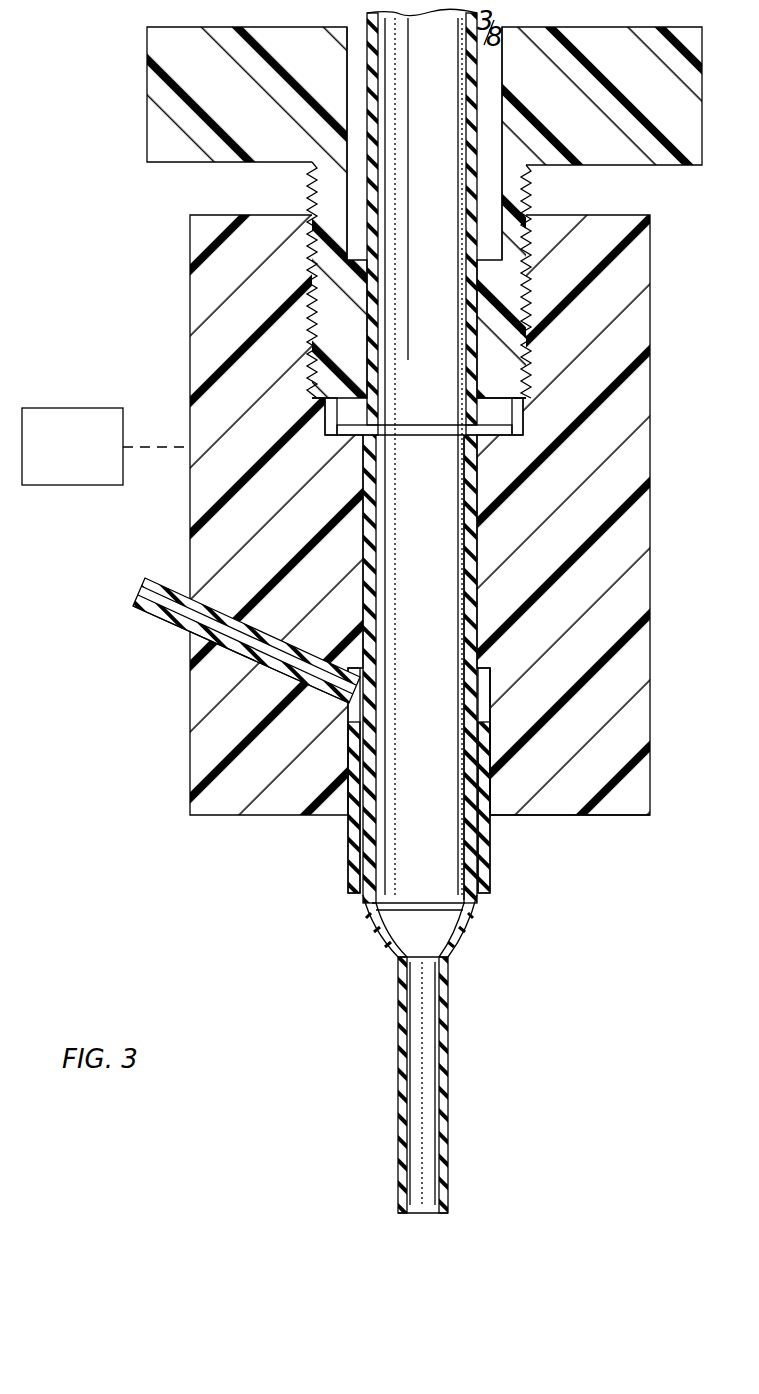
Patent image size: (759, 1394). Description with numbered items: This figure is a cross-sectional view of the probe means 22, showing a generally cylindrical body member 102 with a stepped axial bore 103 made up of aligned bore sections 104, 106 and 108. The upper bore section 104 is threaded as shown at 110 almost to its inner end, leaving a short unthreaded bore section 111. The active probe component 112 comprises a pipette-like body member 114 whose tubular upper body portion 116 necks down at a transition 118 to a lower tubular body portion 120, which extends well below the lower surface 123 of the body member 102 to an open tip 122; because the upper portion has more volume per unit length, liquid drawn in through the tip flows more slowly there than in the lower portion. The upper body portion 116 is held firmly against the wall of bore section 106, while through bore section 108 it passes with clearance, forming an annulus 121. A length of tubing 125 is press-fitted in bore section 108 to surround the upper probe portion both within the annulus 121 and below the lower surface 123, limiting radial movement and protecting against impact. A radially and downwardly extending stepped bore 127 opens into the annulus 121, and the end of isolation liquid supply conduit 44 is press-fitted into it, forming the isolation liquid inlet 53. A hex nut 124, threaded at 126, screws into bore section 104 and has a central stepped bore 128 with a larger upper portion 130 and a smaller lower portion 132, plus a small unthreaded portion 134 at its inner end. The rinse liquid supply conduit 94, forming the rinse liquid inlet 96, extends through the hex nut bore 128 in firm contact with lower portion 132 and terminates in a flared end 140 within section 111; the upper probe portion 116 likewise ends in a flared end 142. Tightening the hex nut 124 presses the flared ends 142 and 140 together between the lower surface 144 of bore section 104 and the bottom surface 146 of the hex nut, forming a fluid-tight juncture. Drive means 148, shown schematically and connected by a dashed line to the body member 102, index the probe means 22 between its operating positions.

The probe means 22 is at (663, 405).
The isolation liquid supply conduit 44 is at (163, 627).
The isolation liquid inlet 53 is at (188, 643).
The rinse liquid supply conduit 94 is at (375, 192).
The rinse liquid inlet 96 is at (480, 250).
The body member 102 is at (628, 548).
The axial bore 103 is at (473, 550).
The bore section 104 is at (312, 268).
The bore section 106 is at (363, 573).
The bore section 108 is at (489, 692).
The threads 110 is at (531, 270).
The unthreaded bore section 111 is at (516, 416).
The active probe component 112 is at (449, 1028).
The pipette-like body member 114 is at (470, 610).
The upper body portion 116 is at (365, 893).
The neck-down transition 118 is at (388, 940).
The lower body portion 120 is at (447, 1100).
The annulus 121 is at (488, 672).
The open tip 122 is at (450, 1213).
The lower surface 123 is at (551, 816).
The hex nut 124 is at (165, 153).
The tubing 125 is at (490, 745).
The threads 126 is at (529, 197).
The stepped bore 127 is at (282, 673).
The stepped bore 128 is at (348, 122).
The upper bore portion 130 is at (507, 86).
The lower bore portion 132 is at (465, 338).
The unthreaded portion 134 is at (327, 405).
The flared end 140 is at (505, 378).
The flared end 142 is at (495, 437).
The lower surface 144 is at (352, 440).
The bottom surface 146 is at (345, 427).
The probe means drive means 148 is at (65, 485).